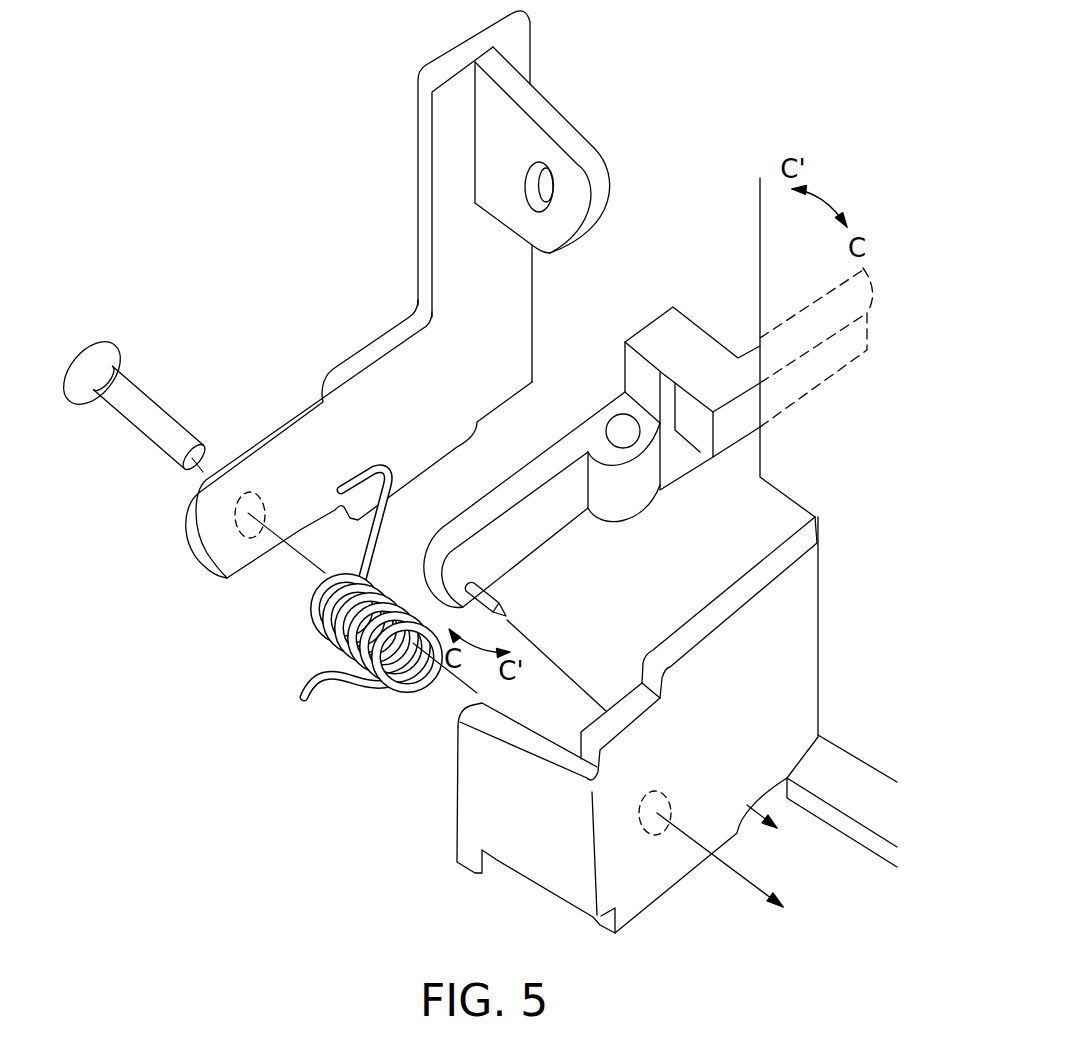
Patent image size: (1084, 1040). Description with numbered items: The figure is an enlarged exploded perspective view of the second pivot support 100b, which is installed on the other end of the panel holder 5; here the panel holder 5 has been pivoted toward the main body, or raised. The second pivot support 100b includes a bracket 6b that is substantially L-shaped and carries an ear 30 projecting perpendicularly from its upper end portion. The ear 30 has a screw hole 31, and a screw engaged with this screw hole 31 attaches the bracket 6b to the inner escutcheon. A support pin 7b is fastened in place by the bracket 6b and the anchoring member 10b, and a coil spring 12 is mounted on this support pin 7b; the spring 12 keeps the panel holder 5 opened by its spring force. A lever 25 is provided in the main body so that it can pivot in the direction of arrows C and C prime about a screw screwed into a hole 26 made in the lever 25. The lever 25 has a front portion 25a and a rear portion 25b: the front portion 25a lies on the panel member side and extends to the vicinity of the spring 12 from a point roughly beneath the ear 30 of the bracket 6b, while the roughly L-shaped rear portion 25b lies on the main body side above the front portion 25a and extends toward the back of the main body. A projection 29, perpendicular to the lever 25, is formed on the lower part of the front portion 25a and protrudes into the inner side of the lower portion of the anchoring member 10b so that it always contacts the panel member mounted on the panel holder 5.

The second pivot support 100b is at (290, 103).
The ear 30 is at (525, 90).
The screw hole 31 is at (547, 172).
The bracket 6b is at (370, 379).
The support pin 7b is at (128, 392).
The coil spring 12 is at (312, 630).
The lever 25 is at (718, 383).
The front portion 25a is at (545, 520).
The rear portion 25b is at (682, 323).
The hole 26 is at (617, 432).
The projection 29 is at (508, 600).
The anchoring member 10b is at (633, 900).
The panel holder 5 is at (848, 798).